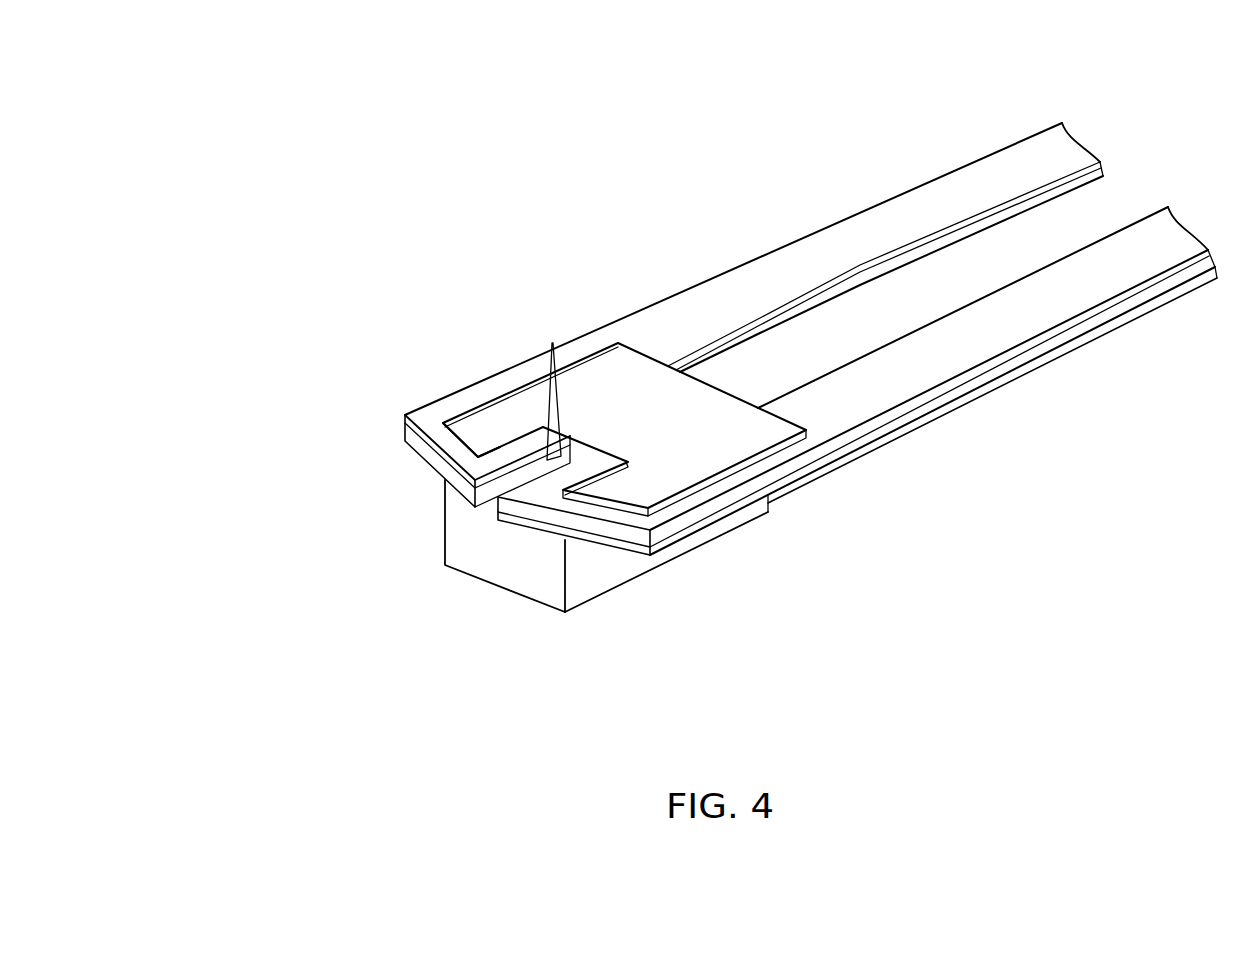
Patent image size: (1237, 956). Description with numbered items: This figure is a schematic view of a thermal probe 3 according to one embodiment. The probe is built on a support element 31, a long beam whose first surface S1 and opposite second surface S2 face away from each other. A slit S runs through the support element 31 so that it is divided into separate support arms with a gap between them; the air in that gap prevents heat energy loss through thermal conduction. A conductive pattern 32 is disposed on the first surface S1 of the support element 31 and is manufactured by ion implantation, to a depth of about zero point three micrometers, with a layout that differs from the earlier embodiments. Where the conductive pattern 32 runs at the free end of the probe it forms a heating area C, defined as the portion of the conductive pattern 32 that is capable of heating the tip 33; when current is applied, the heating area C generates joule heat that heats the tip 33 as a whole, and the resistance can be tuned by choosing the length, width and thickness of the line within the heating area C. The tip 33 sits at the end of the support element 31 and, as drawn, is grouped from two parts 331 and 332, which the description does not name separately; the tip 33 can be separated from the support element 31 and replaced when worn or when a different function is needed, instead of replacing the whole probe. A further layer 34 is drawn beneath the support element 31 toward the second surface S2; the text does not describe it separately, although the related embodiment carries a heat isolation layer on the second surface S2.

The thermal probe 3 is at (352, 146).
The support element 31 is at (873, 433).
The conductive pattern 32 is at (760, 278).
The tip 33 is at (302, 348).
The base block 331 is at (460, 548).
The frame 332 is at (548, 350).
The spacer strip 34 is at (790, 489).
The first surface S1 is at (605, 373).
The second surface S2 is at (592, 545).
The slit S is at (533, 472).
The heating area C is at (497, 452).